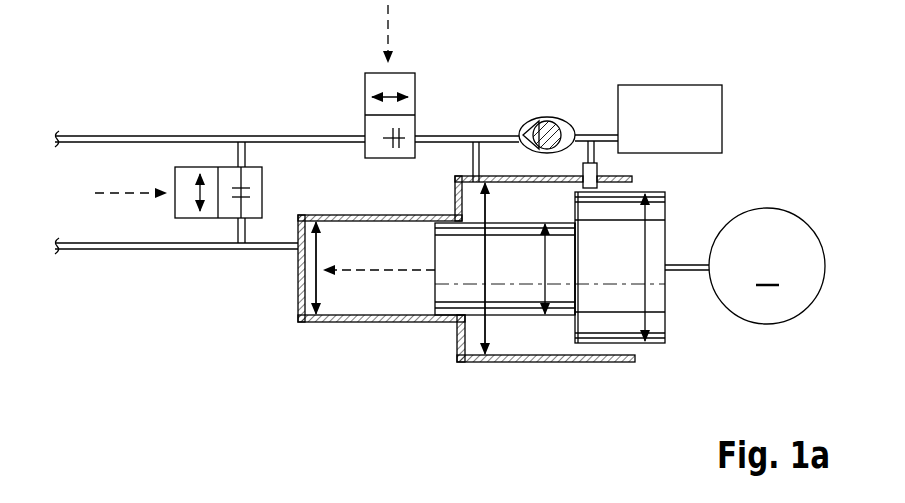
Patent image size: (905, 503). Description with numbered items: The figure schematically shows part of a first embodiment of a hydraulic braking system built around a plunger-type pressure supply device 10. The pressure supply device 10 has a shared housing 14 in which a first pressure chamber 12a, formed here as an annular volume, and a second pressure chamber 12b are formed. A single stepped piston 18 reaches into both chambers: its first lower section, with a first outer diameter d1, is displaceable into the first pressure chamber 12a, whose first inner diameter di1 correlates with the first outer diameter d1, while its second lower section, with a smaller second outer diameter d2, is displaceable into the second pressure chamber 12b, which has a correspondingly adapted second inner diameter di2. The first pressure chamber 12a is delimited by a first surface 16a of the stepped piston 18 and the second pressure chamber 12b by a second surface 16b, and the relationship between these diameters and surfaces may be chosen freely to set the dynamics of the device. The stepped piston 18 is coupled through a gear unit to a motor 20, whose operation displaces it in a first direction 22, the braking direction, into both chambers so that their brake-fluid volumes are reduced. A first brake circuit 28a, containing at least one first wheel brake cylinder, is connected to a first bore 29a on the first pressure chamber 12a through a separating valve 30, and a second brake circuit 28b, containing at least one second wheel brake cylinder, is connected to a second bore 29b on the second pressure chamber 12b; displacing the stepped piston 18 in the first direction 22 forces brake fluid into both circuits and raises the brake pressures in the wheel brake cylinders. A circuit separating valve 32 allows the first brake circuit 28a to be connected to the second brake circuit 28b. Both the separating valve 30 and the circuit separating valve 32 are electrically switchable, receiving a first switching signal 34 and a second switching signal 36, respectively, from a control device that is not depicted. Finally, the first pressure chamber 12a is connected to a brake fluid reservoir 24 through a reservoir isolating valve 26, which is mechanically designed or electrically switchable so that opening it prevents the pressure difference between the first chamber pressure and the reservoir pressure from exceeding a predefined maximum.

The pressure supply device 10 is at (615, 413).
The first pressure chamber 12a is at (507, 335).
The second pressure chamber 12b is at (365, 298).
The housing 14 is at (300, 313).
The first surface 16a is at (578, 325).
The second surface 16b is at (445, 294).
The stepped piston 18 is at (620, 322).
The motor 20 is at (788, 322).
The first direction 22 is at (383, 267).
The brake fluid reservoir 24 is at (722, 118).
The reservoir isolating valve 26 is at (557, 115).
The first brake circuit 28a is at (106, 145).
The second brake circuit 28b is at (96, 240).
The first bore 29a is at (483, 173).
The second bore 29b is at (293, 250).
The separating valve 30 is at (416, 104).
The circuit separating valve 32 is at (263, 178).
The first switching signal 34 is at (390, 28).
The second switching signal 36 is at (118, 195).
The first outer diameter d1 is at (647, 297).
The second outer diameter d2 is at (542, 270).
The first inner diameter di1 is at (481, 210).
The second inner diameter di2 is at (300, 285).